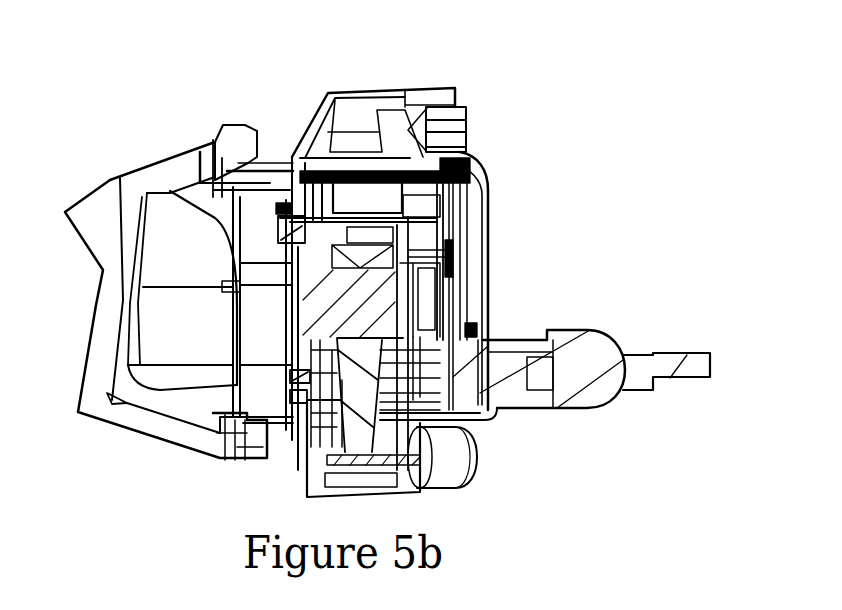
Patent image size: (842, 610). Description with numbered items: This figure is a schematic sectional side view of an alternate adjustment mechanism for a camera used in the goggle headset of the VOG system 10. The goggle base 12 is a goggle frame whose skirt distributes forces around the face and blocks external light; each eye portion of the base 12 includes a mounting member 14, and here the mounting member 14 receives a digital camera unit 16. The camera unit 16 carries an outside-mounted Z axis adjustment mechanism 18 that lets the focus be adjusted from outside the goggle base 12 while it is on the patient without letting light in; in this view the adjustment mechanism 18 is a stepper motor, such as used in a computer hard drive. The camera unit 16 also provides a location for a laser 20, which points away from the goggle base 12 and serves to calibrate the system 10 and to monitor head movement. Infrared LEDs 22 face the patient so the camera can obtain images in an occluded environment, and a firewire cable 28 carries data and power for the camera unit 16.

The VOG system 10 is at (164, 84).
The goggle base 12 is at (90, 193).
The mounting member 14 is at (285, 168).
The digital camera unit 16 is at (488, 228).
The Z axis adjustment mechanism 18 is at (457, 463).
The laser 20 is at (465, 132).
The infrared LEDs 22 is at (228, 287).
The firewire cable 28 is at (624, 378).